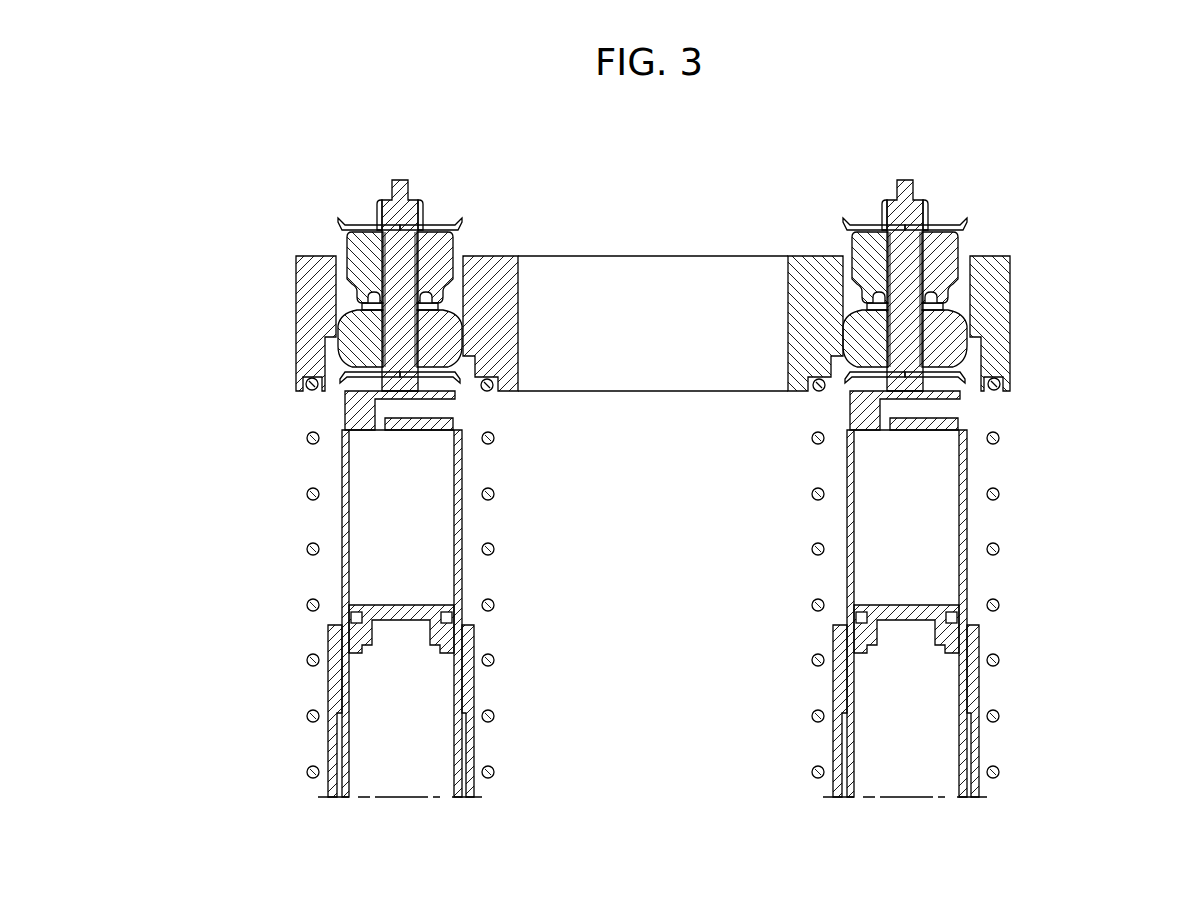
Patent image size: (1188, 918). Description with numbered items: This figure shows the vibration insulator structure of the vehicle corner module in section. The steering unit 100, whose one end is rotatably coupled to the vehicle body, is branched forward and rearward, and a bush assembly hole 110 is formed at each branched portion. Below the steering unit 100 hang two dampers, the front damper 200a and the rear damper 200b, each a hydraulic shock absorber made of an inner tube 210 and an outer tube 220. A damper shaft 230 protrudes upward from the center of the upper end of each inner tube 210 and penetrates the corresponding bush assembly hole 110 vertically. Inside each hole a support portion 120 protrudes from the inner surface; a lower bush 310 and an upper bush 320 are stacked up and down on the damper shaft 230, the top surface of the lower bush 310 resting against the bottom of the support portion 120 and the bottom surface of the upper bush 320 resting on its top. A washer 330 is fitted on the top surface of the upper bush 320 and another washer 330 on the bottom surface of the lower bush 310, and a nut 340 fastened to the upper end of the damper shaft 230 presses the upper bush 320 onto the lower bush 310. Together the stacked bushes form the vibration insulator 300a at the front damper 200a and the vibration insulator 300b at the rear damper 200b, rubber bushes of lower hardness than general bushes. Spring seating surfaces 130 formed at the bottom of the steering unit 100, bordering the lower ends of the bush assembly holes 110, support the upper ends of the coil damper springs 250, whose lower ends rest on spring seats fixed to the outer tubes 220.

The steering unit 100 is at (808, 262).
The bush assembly hole 110 is at (443, 262).
The support portion 120 is at (452, 308).
The spring seating surface 130 is at (320, 380).
The front damper 200a is at (978, 468).
The rear damper 200b is at (332, 468).
The inner tube 210 is at (342, 526).
The outer tube 220 is at (333, 690).
The damper shaft 230 is at (407, 213).
The damper spring 250 is at (307, 658).
The vibration insulator 300a is at (1095, 270).
The vibration insulator 300b is at (212, 270).
The lower bush 310 is at (358, 332).
The upper bush 320 is at (358, 267).
The washer 330 is at (942, 228).
The nut 340 is at (380, 203).